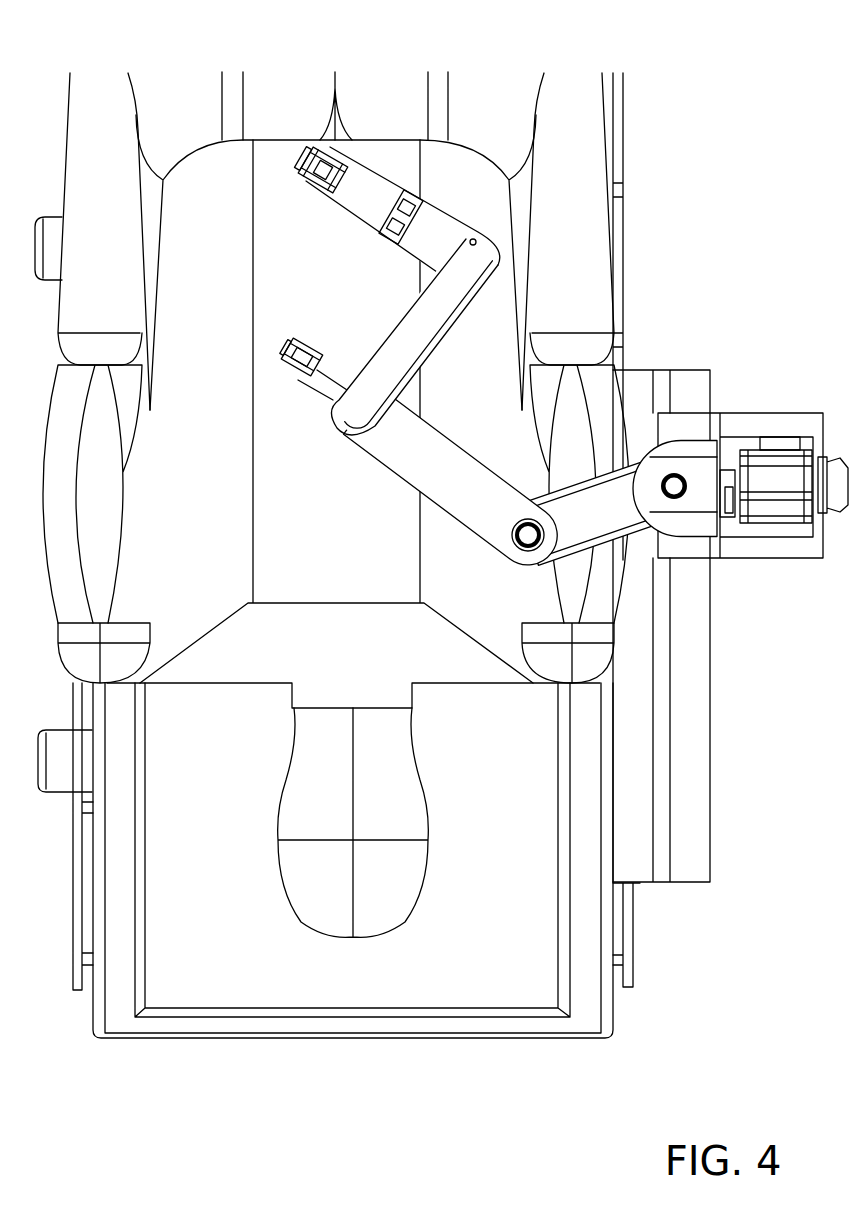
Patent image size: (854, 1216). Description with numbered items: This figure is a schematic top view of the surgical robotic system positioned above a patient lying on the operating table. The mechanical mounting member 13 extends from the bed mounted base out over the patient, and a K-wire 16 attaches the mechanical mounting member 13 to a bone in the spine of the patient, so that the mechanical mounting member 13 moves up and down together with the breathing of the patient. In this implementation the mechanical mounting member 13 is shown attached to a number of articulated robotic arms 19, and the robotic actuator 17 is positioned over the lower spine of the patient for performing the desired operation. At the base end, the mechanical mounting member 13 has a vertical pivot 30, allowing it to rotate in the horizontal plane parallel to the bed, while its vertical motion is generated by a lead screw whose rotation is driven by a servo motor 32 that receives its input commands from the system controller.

The mechanical mounting member 13 is at (463, 462).
The K-wire 16 is at (310, 338).
The robotic actuator 17 is at (313, 158).
The articulated robotic arms 19 is at (399, 321).
The vertical pivot 30 is at (676, 474).
The servo motor 32 is at (767, 470).